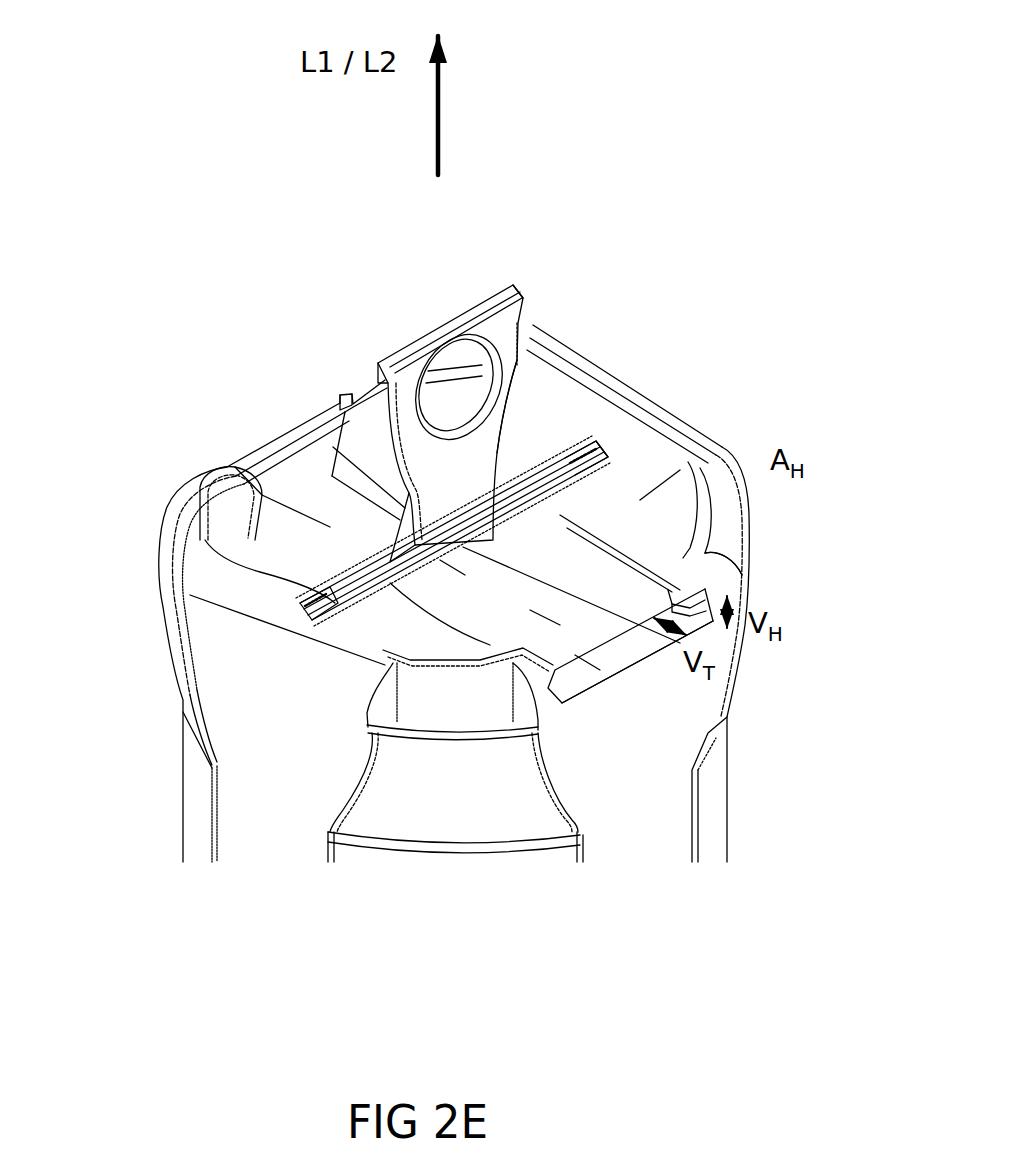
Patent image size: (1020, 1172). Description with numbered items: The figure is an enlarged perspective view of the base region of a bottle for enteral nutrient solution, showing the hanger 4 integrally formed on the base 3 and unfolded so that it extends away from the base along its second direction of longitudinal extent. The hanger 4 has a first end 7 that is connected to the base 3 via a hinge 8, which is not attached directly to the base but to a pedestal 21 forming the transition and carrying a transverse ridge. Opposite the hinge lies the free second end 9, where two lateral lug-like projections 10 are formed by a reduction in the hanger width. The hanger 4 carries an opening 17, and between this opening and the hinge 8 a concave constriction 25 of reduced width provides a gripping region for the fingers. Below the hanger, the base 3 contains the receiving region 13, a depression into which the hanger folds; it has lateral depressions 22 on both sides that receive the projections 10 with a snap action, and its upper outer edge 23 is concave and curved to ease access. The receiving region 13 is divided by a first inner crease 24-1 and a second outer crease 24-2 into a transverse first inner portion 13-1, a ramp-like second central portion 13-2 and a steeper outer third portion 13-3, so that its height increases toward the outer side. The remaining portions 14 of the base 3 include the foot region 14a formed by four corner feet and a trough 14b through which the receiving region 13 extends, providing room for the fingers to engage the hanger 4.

The base 3 is at (474, 596).
The hanger 4 is at (503, 404).
The first end 7 is at (517, 618).
The hinge 8 is at (460, 618).
The second end 9 is at (510, 348).
The projections 10 is at (388, 368).
The receiving region 13 is at (332, 475).
The first inner portion 13-1 is at (452, 572).
The second central portion 13-2 is at (545, 617).
The outer third portion 13-3 is at (582, 660).
The remaining portions 14 is at (185, 468).
The foot region 14a is at (722, 517).
The trough 14b is at (528, 440).
The opening 17 is at (465, 360).
The pedestal 21 is at (572, 470).
The depressions 22 is at (333, 398).
The upper outer edge 23 is at (628, 667).
The first inner crease 24-1 is at (363, 533).
The second outer crease 24-2 is at (333, 447).
The constriction 25 is at (408, 512).